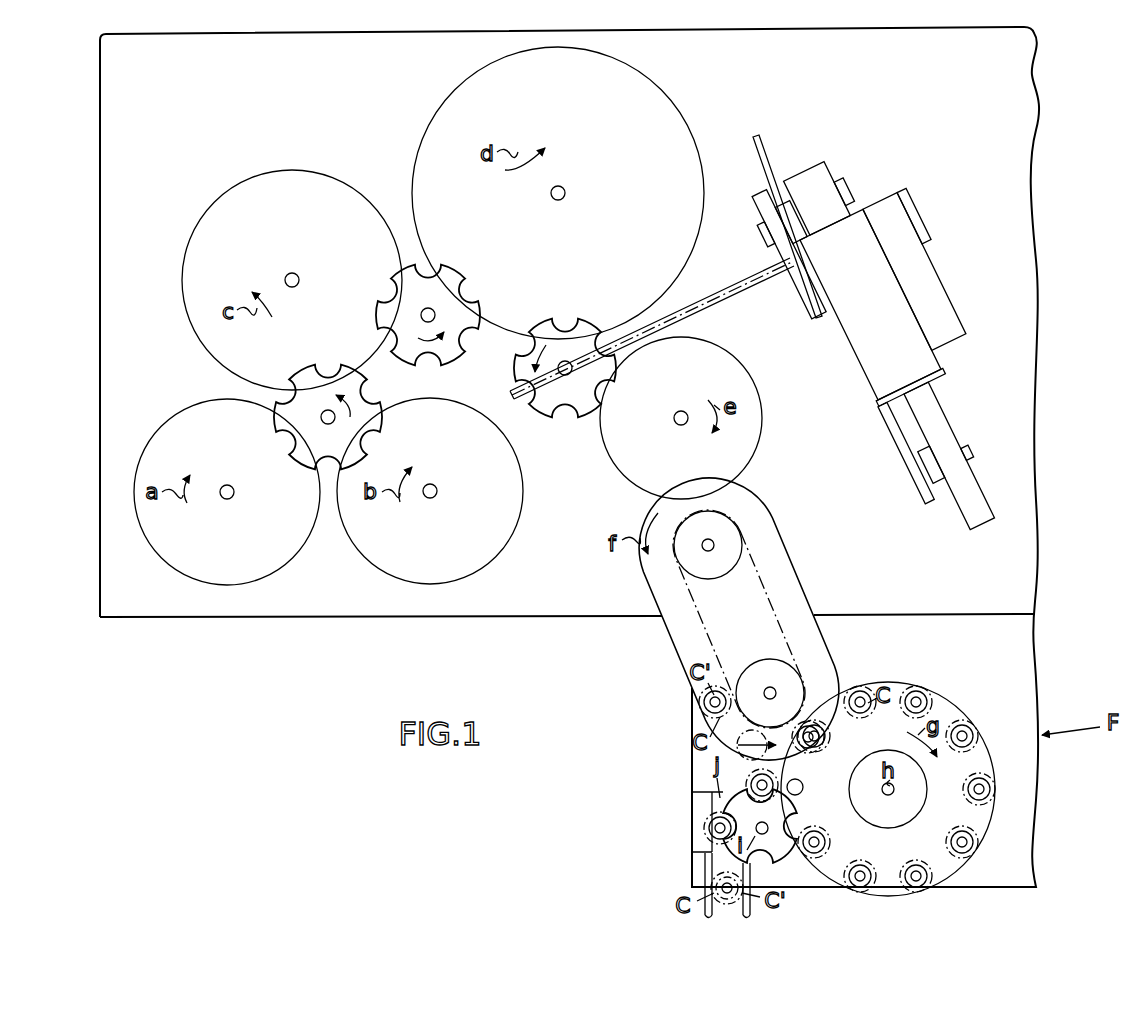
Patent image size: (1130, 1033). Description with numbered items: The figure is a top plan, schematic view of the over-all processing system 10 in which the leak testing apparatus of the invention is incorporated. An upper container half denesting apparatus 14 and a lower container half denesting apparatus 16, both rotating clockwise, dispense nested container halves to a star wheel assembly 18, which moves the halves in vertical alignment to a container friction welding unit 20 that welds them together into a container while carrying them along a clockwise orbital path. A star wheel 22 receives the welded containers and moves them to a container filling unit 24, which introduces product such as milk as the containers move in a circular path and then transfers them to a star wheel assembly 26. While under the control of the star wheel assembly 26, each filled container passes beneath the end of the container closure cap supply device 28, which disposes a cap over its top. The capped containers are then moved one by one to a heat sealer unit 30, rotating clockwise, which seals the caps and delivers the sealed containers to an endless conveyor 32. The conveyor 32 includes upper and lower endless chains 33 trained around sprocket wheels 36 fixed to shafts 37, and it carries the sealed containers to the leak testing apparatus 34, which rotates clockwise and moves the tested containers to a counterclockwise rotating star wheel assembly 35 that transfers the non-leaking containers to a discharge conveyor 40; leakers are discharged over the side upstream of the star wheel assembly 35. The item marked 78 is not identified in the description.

The processing system 10 is at (326, 157).
The upper container half denesting apparatus 14 is at (185, 572).
The lower container half denesting apparatus 16 is at (395, 575).
The star wheel assembly 18 is at (357, 394).
The container friction welding unit 20 is at (190, 232).
The star wheel 22 is at (446, 352).
The container filling unit 24 is at (427, 128).
The star wheel assembly 26 is at (552, 411).
The container closure cap supply device 28 is at (780, 285).
The heat sealer unit 30 is at (764, 418).
The endless conveyor 32 is at (761, 619).
The endless chains 33 is at (711, 640).
The leak testing apparatus 34 is at (931, 787).
The star wheel assembly 35 is at (778, 850).
The sprocket wheels 36 is at (710, 579).
The shafts 37 is at (710, 551).
The discharge conveyor 40 is at (715, 870).
The pocket 78 is at (912, 710).